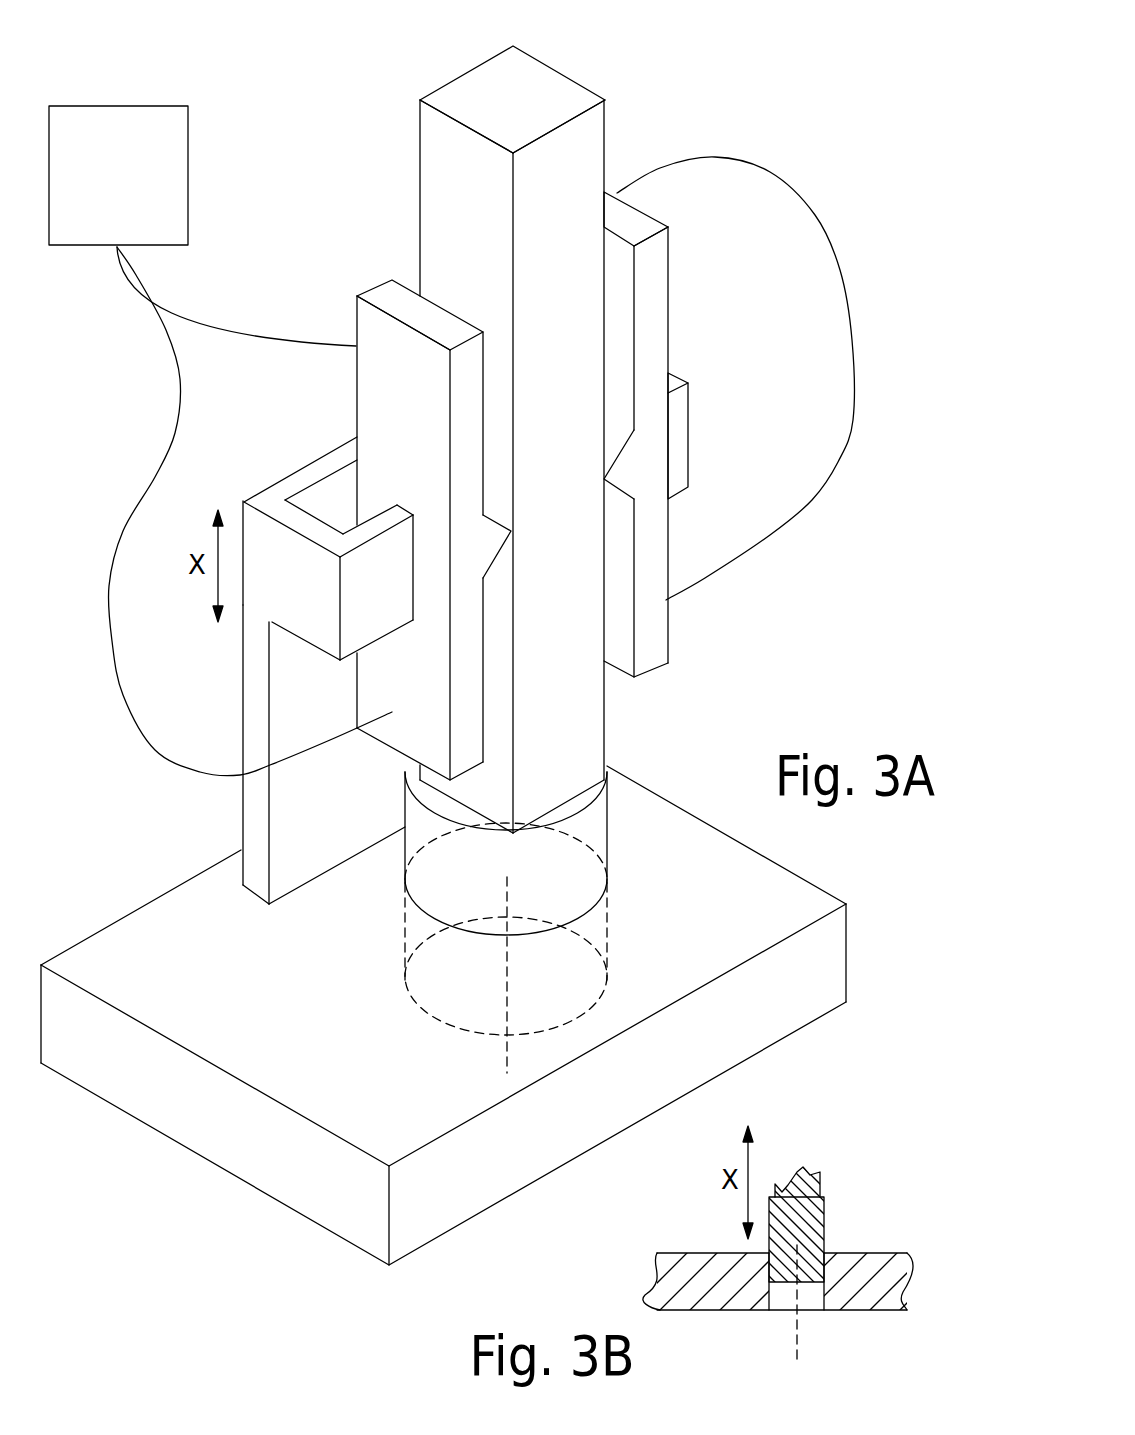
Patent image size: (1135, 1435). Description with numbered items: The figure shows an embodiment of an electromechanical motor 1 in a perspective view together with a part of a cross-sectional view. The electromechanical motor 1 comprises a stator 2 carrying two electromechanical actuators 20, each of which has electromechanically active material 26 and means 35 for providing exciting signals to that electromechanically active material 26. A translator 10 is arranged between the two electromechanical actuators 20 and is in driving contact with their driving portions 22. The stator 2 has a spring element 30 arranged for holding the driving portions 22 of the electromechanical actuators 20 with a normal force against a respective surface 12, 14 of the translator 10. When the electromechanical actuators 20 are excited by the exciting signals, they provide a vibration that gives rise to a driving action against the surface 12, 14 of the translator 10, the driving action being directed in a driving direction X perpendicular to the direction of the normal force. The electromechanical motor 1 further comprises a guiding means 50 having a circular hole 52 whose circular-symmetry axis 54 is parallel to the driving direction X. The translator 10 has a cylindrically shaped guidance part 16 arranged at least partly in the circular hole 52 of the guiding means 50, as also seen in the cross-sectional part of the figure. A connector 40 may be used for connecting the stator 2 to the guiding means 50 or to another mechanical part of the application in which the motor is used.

In FIG. 3A, the electromechanical motor 1 is at (826, 107).
In FIG. 3A, the stator 2 is at (657, 636).
In FIG. 3A, the translator 10 is at (587, 138).
In FIG. 3B, the translator 10 is at (810, 1177).
In FIG. 3A, the surface of the translator 12 is at (435, 163).
In FIG. 3A, the surface of the translator 14 is at (604, 702).
In FIG. 3A, the guidance part 16 is at (607, 812).
In FIG. 3B, the guidance part 16 is at (815, 1222).
In FIG. 3A, the electromechanical actuator 20 is at (383, 293).
In FIG. 3A, the driving portion 22 is at (521, 532).
In FIG. 3A, the electromechanically active material 26 is at (372, 413).
In FIG. 3A, the spring element 30 is at (323, 462).
In FIG. 3A, the means for providing exciting signals 35 is at (165, 182).
In FIG. 3A, the connector 40 is at (298, 865).
In FIG. 3A, the guiding means 50 is at (828, 962).
In FIG. 3B, the guiding means 50 is at (853, 1297).
In FIG. 3A, the circular hole 52 is at (610, 953).
In FIG. 3B, the circular hole 52 is at (770, 1297).
In FIG. 3A, the circular-symmetry axis 54 is at (505, 1066).
In FIG. 3B, the circular-symmetry axis 54 is at (795, 1358).